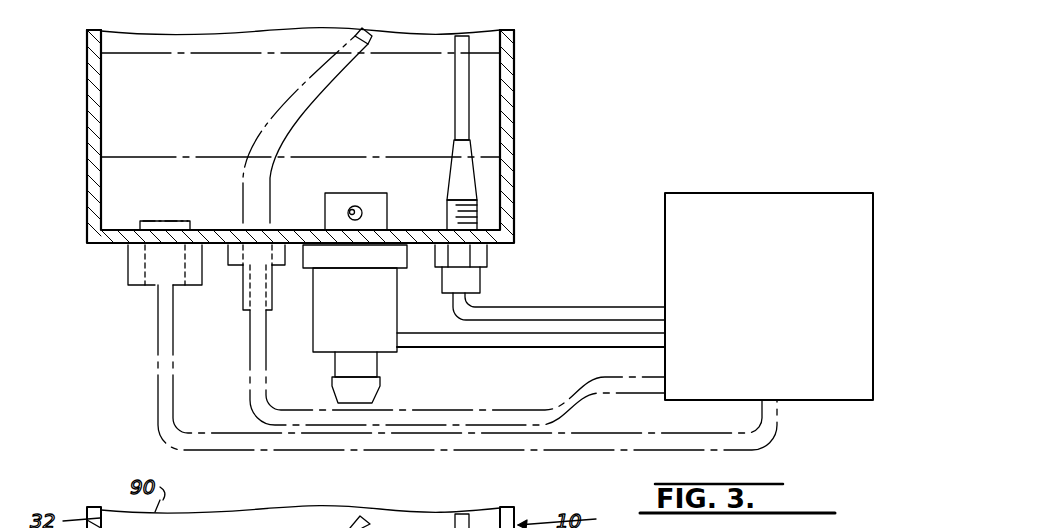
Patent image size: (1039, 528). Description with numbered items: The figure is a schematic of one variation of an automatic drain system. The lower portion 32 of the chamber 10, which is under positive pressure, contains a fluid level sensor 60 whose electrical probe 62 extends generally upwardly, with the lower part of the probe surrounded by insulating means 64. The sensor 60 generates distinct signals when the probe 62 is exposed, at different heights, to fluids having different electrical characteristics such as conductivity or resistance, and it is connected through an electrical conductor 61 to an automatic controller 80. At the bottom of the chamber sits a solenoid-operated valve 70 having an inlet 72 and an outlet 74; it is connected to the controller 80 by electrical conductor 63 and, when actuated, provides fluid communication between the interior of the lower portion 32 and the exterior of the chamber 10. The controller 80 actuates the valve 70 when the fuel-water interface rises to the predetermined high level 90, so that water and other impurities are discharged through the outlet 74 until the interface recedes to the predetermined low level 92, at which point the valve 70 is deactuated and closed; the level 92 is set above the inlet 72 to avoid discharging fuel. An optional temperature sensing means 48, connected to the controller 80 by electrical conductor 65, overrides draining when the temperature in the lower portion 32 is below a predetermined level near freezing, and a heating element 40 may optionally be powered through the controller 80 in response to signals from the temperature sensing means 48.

The chamber 10 is at (596, 44).
The lower portion of the chamber 32 is at (115, 44).
The heating element 40 is at (310, 108).
The temperature sensing means 48 is at (140, 222).
The fluid level sensor 60 is at (504, 164).
The electrical conductor 61 is at (536, 306).
The electrical probe 62 is at (470, 80).
The electrical conductor 63 is at (507, 337).
The insulating means 64 is at (473, 175).
The electrical conductor 65 is at (158, 325).
The solenoid-operated valve 70 is at (367, 324).
The inlet 72 is at (349, 213).
The outlet 74 is at (372, 403).
The automatic controller 80 is at (741, 216).
The predetermined high interface level 90 is at (170, 52).
The predetermined low interface level 92 is at (131, 157).